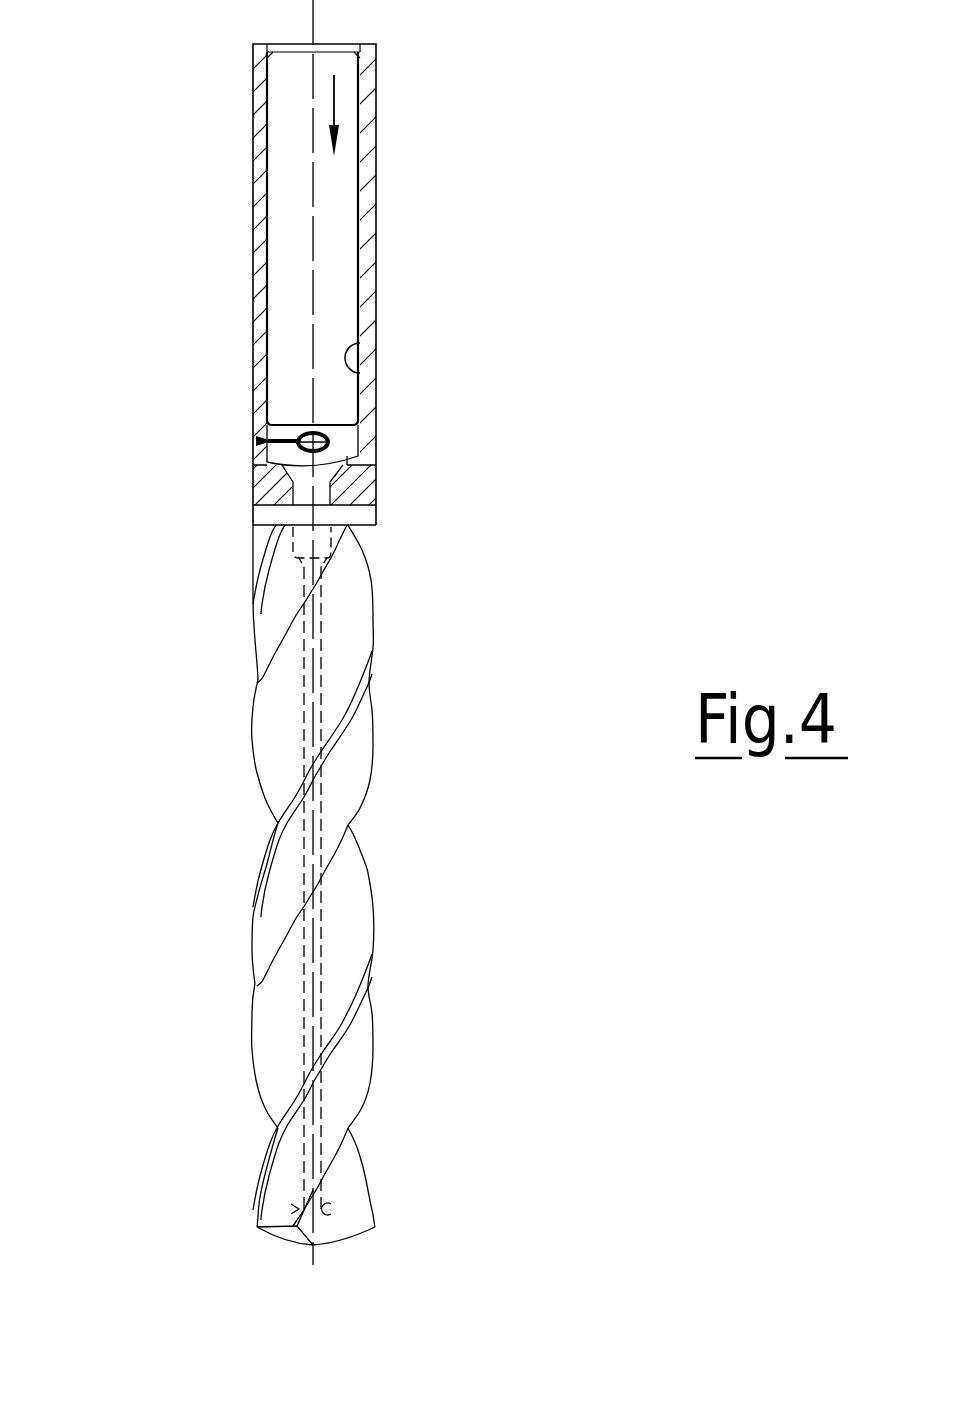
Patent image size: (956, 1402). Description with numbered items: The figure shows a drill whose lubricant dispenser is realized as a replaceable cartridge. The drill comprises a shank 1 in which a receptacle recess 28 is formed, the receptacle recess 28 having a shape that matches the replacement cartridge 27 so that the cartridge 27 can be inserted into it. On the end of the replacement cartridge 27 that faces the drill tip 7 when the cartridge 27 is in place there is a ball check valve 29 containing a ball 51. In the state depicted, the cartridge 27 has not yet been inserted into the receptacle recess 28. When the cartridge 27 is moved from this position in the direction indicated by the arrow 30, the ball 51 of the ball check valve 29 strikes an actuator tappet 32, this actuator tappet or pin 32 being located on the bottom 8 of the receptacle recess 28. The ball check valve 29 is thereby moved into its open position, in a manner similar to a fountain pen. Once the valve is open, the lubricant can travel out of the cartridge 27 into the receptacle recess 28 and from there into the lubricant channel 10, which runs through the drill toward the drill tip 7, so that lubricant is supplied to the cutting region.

The shank 1 is at (378, 212).
The replacement cartridge 27 is at (287, 243).
The arrow 30 is at (335, 95).
The receptacle recess 28 is at (370, 343).
The ball 51 is at (311, 428).
The ball check valve 29 is at (258, 440).
The actuator tappet 32 is at (352, 456).
The bottom of the receptacle recess 8 is at (300, 455).
The lubricant channel 10 is at (311, 698).
The drill tip 7 is at (340, 1253).